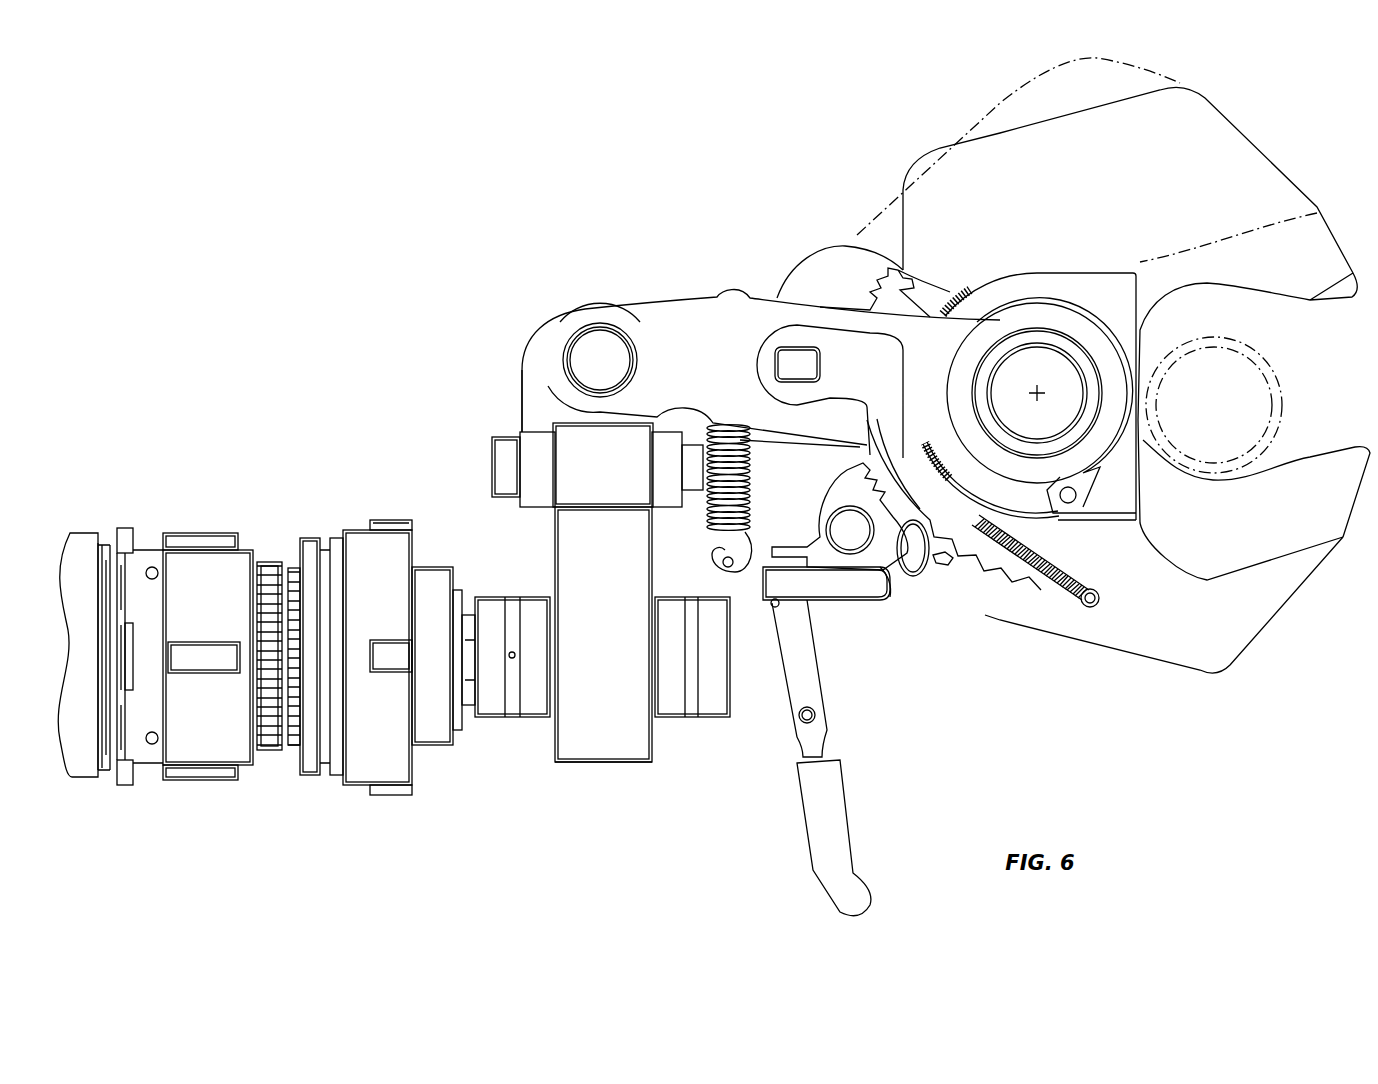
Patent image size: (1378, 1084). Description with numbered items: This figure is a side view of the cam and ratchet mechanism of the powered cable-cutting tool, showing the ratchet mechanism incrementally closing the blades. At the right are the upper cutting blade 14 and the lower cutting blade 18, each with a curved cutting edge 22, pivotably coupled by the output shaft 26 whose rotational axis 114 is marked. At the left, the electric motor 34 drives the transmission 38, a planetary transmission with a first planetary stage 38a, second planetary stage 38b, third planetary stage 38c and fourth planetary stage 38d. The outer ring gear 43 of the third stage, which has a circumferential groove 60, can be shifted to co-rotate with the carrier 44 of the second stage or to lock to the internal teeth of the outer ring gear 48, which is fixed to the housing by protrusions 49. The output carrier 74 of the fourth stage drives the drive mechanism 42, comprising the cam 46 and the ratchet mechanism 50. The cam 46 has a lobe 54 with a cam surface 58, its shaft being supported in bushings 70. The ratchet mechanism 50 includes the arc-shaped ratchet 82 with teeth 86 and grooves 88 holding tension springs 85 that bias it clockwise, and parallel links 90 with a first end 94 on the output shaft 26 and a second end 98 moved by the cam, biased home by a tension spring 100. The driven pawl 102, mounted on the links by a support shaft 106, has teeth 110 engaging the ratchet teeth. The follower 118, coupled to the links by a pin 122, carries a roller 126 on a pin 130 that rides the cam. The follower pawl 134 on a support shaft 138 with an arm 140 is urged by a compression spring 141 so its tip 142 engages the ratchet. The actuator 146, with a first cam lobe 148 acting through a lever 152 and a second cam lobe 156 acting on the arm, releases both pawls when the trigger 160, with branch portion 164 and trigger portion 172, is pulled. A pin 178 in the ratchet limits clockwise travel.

The upper cutting blade 14 is at (1369, 225).
The lower cutting blade 18 is at (1202, 652).
The curved cutting edge 22 is at (1290, 290).
The output shaft 26 is at (1028, 365).
The electric motor 34 is at (82, 760).
The transmission 38 is at (257, 846).
The first planetary stage 38a is at (180, 699).
The second planetary stage 38b is at (197, 788).
The third planetary stage 38c is at (268, 540).
The fourth planetary stage 38d is at (393, 505).
The drive mechanism 42 is at (446, 205).
The outer ring gear 43 is at (315, 535).
The carrier 44 is at (272, 755).
The cam 46 is at (602, 634).
The outer ring gear 48 is at (362, 780).
The protrusions 49 is at (396, 522).
The ratchet mechanism 50 is at (671, 230).
The lobe 54 is at (633, 765).
The cam surface 58 is at (590, 710).
The circumferential groove 60 is at (325, 780).
The bushings 70 is at (490, 700).
The output carrier 74 is at (437, 570).
The ratchet 82 is at (1058, 530).
The tension springs 85 is at (1068, 620).
The ratchet teeth 86 is at (1000, 600).
The grooves 88 is at (957, 300).
The parallel links 90 is at (717, 339).
The first end 94 is at (1072, 325).
The second end 98 is at (593, 318).
The tension spring 100 is at (751, 450).
The driven pawl 102 is at (838, 270).
The support shaft 106 is at (790, 365).
The pawl teeth 110 is at (920, 285).
The rotational axis 114 is at (1045, 393).
The follower 118 is at (537, 378).
The pin 122 is at (605, 353).
The roller 126 is at (603, 483).
The pin 130 is at (695, 485).
The follower pawl 134 is at (823, 495).
The support shaft 138 is at (845, 528).
The arm 140 is at (945, 575).
The compression spring 141 is at (762, 606).
The tip 142 is at (860, 468).
The actuator 146 is at (820, 592).
The first cam lobe 148 is at (920, 580).
The lever 152 is at (888, 407).
The second cam lobe 156 is at (886, 578).
The trigger 160 is at (835, 758).
The branch portion 164 is at (797, 637).
The trigger portion 172 is at (827, 848).
The pin 178 is at (1072, 500).